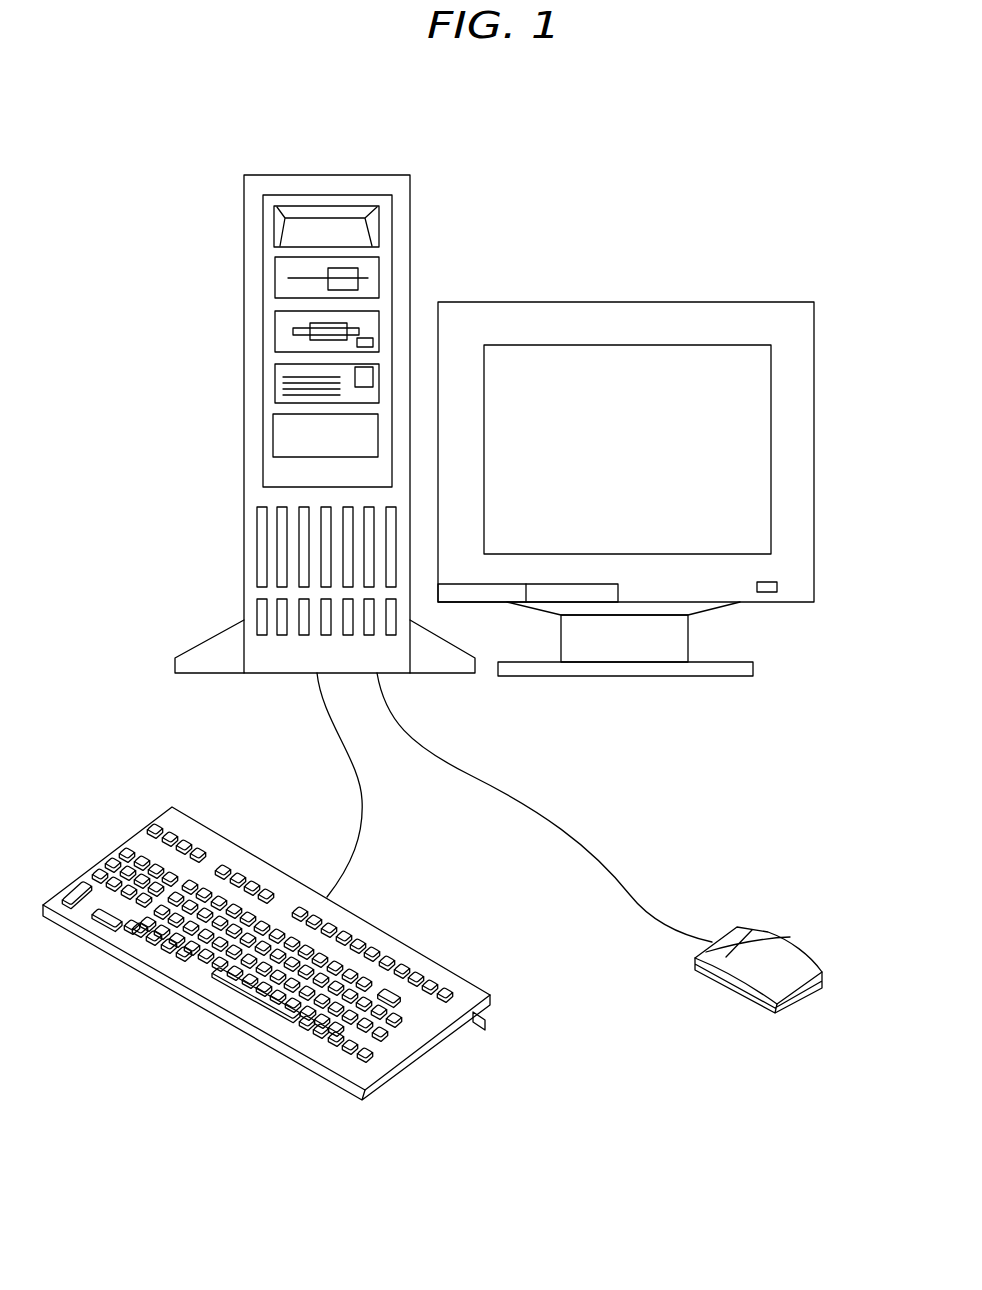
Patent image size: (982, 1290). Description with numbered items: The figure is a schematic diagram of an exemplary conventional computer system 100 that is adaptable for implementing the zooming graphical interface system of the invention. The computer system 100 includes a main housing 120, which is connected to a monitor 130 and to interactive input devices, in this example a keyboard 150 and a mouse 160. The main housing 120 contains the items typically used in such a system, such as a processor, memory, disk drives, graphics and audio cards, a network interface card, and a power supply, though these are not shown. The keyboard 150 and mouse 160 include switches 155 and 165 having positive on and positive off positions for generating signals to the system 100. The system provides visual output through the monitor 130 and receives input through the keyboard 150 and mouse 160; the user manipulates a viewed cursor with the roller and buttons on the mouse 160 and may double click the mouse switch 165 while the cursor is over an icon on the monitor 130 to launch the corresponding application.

The computer system 100 is at (640, 237).
The main housing 120 is at (328, 174).
The monitor 130 is at (815, 452).
The keyboard 150 is at (140, 831).
The switches 155 is at (243, 958).
The mouse 160 is at (743, 927).
The mouse switch 165 is at (696, 951).